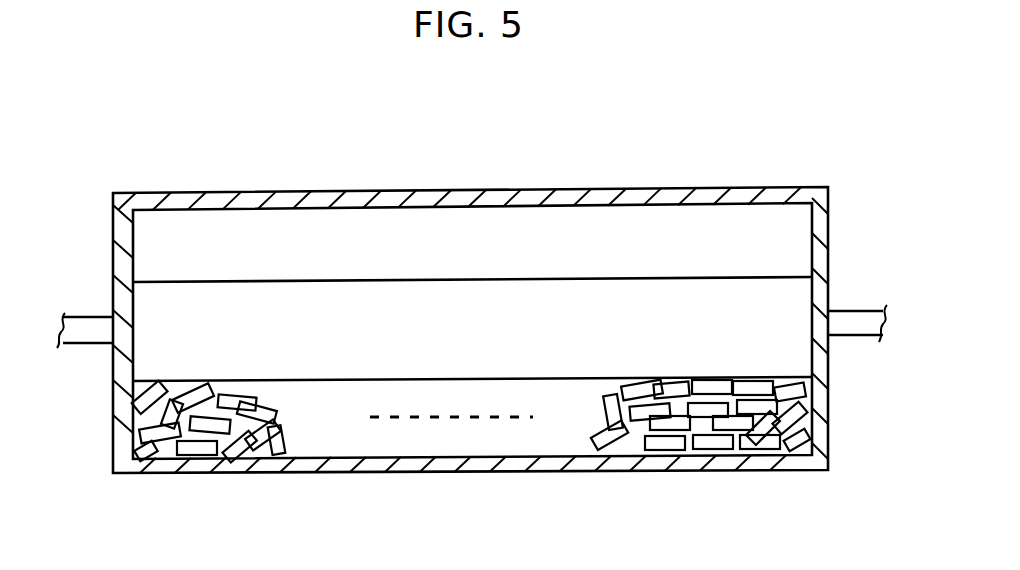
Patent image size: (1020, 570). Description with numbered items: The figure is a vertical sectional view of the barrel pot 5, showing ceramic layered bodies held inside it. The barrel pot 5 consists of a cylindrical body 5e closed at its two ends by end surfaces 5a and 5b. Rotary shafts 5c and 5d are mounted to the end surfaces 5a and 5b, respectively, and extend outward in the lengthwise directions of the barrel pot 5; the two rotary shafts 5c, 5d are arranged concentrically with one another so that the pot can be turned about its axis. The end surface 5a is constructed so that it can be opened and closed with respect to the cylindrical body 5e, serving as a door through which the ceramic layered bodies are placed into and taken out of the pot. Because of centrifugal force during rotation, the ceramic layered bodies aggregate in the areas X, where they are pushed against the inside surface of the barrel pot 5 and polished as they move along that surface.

The barrel pot 5 is at (553, 192).
The end surface 5a is at (113, 385).
The end surface 5b is at (830, 214).
The rotary shaft 5c is at (86, 316).
The rotary shaft 5d is at (846, 311).
The cylindrical body 5e is at (361, 190).
The area X is at (717, 455).